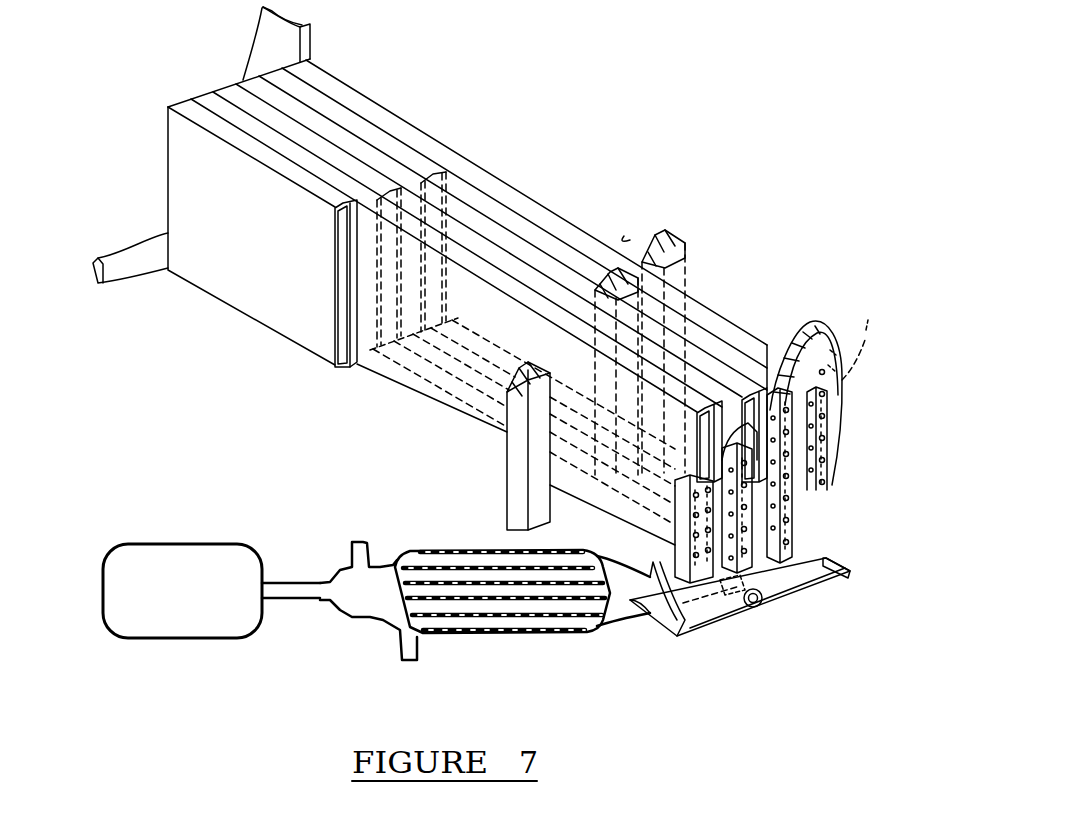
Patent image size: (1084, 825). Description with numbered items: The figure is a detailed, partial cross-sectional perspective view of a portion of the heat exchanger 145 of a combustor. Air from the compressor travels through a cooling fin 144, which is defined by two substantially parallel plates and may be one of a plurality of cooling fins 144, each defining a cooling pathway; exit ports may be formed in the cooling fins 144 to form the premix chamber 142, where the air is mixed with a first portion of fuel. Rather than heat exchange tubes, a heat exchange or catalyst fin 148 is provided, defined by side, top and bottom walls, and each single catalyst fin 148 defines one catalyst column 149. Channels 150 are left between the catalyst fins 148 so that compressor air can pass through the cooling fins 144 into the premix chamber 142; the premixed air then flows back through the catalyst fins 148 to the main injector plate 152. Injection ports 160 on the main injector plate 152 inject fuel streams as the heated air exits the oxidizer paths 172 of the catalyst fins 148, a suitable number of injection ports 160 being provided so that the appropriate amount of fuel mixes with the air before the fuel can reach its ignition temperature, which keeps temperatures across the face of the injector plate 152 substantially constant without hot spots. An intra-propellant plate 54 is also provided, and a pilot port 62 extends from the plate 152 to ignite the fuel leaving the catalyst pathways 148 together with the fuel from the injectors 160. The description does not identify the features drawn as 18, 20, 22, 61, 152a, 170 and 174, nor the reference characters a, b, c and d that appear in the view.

The fluid dispensing system 18 is at (272, 652).
The reservoir 20 is at (185, 560).
The heat exchanger canister 22 is at (422, 550).
The intra-propellant plate 54 is at (518, 498).
The conduit bracket 61 is at (645, 622).
The pilot port 62 is at (760, 606).
The premix chamber 142 is at (305, 40).
The cooling fin 144 is at (230, 272).
The heat exchanger 145 is at (640, 118).
The catalyst fin 148 is at (456, 371).
The catalyst column 149 is at (512, 202).
The channels 150 is at (452, 186).
The main injector plate 152 is at (703, 603).
The manifold end 152a is at (832, 567).
The injection ports 160 is at (820, 338).
The hook 170 is at (628, 236).
The oxidizer paths 172 is at (762, 496).
The hidden guide 174 is at (838, 360).
The slat position a is at (333, 348).
The slat position b is at (362, 350).
The slat position c is at (342, 193).
The slat position d is at (343, 370).